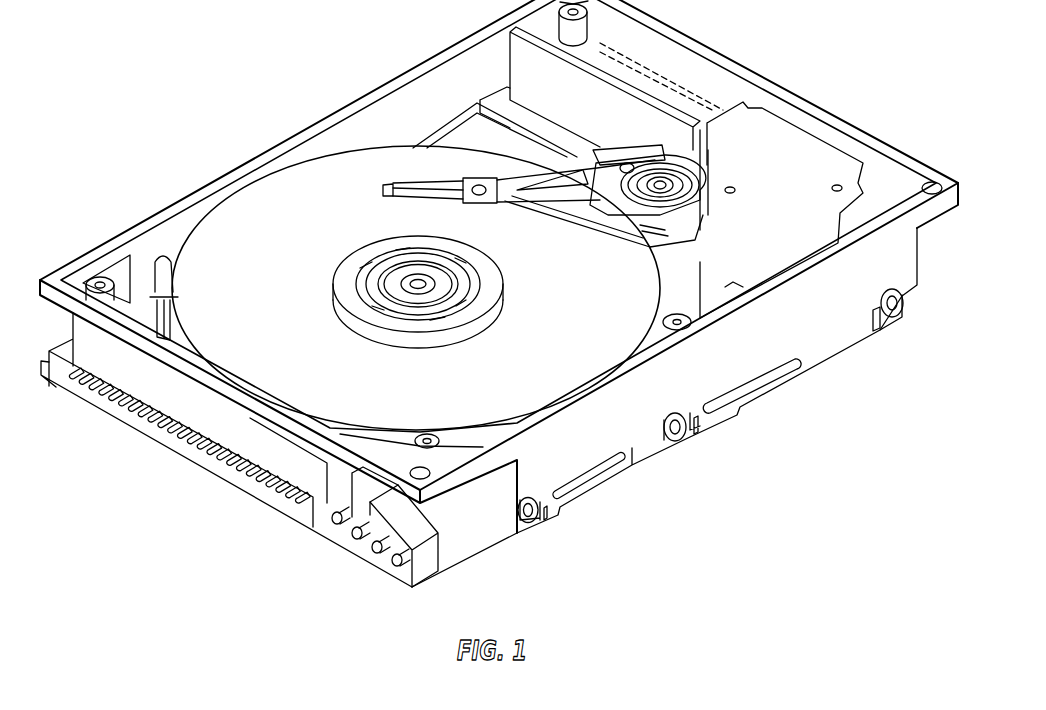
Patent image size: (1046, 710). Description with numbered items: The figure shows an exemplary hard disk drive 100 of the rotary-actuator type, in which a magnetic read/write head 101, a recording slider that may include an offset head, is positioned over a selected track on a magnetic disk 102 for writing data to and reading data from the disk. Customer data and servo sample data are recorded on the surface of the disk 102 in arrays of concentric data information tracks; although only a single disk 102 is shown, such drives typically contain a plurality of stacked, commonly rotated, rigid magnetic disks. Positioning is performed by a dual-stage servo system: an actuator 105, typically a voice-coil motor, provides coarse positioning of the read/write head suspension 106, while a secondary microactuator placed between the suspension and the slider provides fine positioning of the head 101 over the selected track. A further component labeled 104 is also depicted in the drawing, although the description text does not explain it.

The hard disk drive 100 is at (499, 293).
The magnetic read/write head 101 is at (383, 186).
The magnetic disk 102 is at (263, 213).
The voice coil motor 104 is at (787, 140).
The actuator 105 is at (545, 200).
The read/write head suspension 106 is at (428, 192).